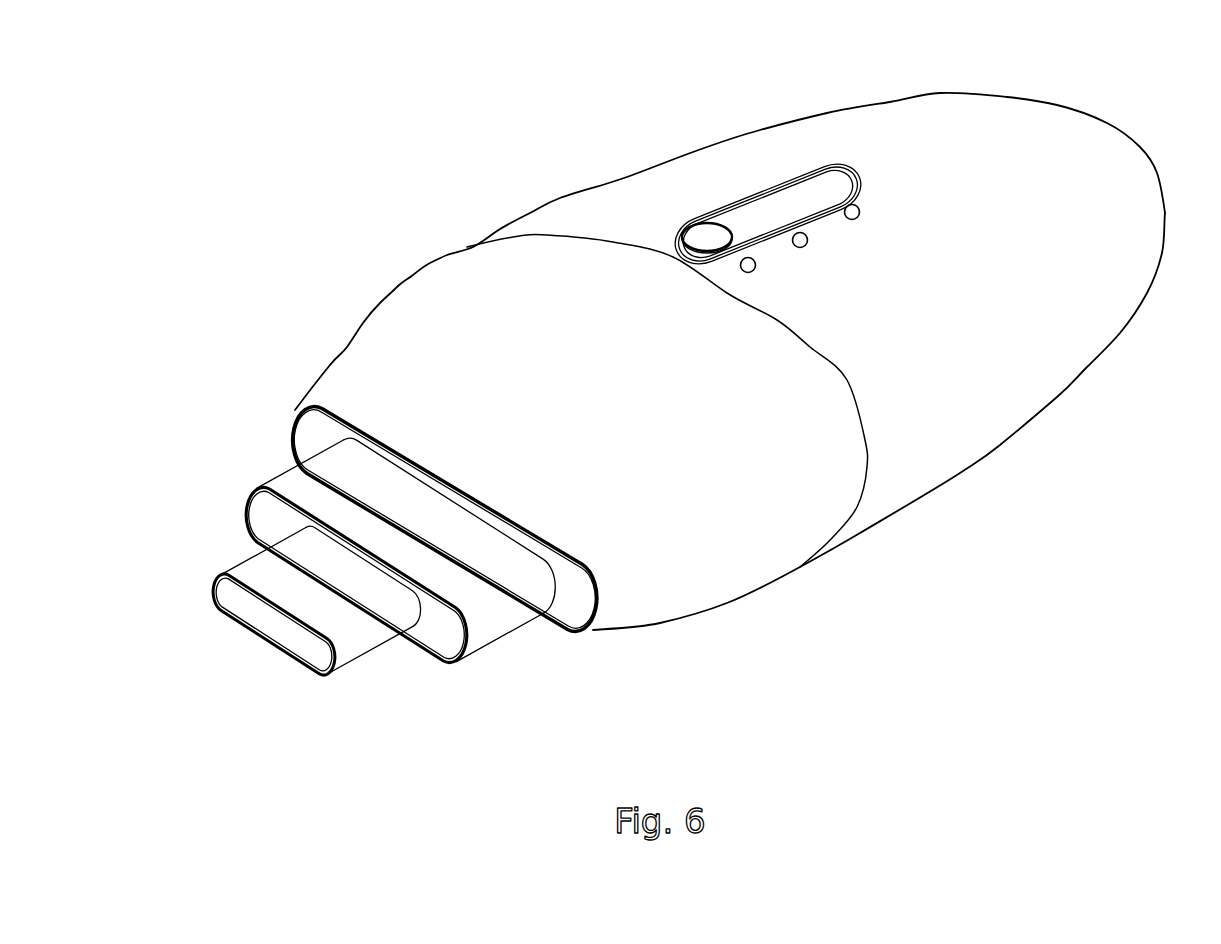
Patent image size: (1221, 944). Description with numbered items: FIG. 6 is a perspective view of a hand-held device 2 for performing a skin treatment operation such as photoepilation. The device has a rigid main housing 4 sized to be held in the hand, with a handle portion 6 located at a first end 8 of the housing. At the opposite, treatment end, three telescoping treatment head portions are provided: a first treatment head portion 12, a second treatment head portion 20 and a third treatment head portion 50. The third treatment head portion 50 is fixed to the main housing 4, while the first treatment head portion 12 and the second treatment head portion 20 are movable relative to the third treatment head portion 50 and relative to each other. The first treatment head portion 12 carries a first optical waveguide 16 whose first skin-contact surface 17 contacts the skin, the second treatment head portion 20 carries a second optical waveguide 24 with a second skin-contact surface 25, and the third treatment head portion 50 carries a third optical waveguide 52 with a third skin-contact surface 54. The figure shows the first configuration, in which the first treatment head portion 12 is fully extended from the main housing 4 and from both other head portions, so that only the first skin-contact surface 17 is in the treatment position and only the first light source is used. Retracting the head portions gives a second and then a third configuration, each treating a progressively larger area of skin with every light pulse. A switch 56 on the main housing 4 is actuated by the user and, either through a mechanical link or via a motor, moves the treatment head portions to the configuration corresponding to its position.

The hand-held device 2 is at (360, 140).
The main housing 4 is at (1008, 387).
The handle portion 6 is at (1113, 170).
The first end 8 is at (347, 380).
The first treatment head portion 12 is at (363, 625).
The first optical waveguide 16 is at (231, 659).
The first skin-contact surface 17 is at (275, 625).
The second treatment head portion 20 is at (310, 480).
The second optical waveguide 24 is at (321, 621).
The second skin-contact surface 25 is at (440, 632).
The third treatment head portion 50 is at (437, 532).
The third optical waveguide 52 is at (573, 605).
The third skin-contact surface 54 is at (558, 605).
The switch 56 is at (707, 235).